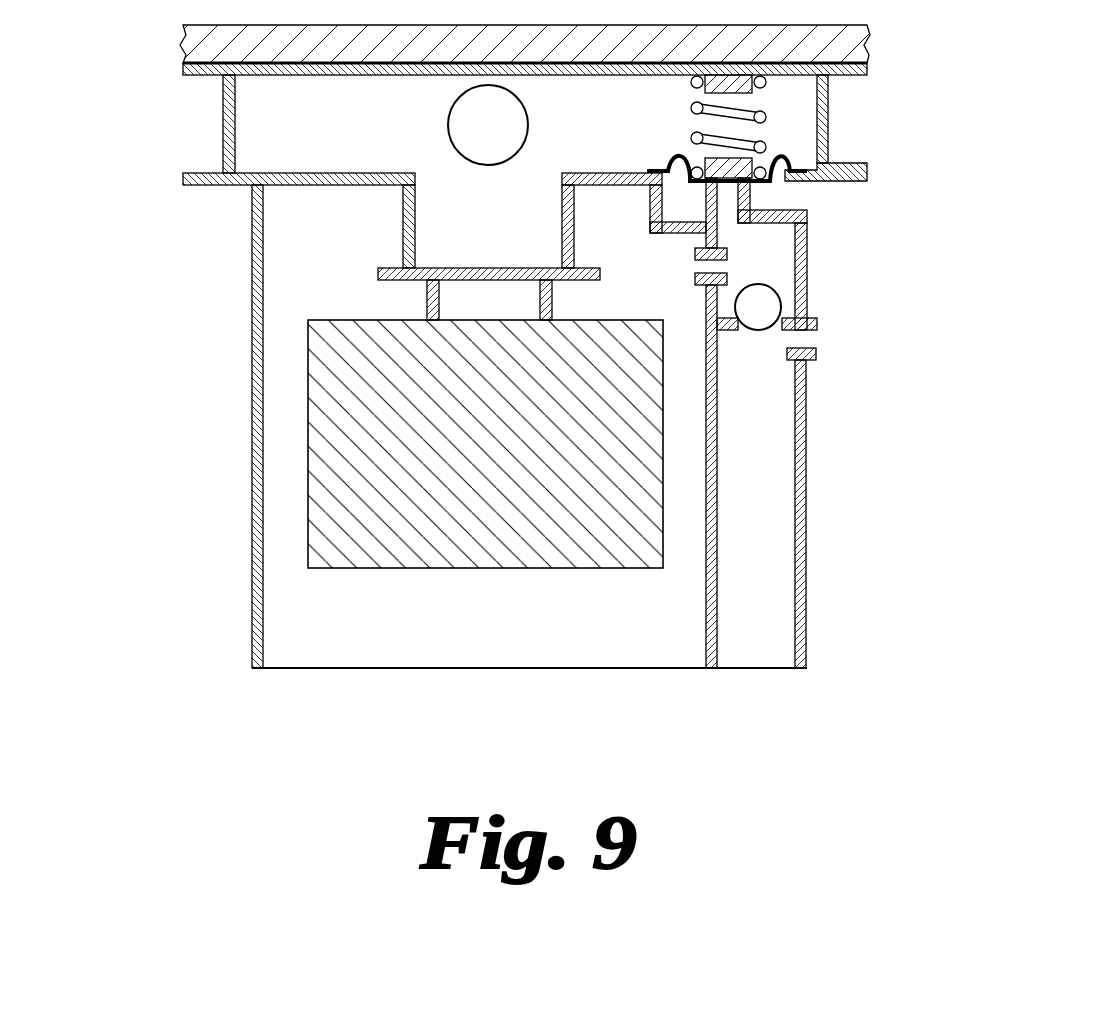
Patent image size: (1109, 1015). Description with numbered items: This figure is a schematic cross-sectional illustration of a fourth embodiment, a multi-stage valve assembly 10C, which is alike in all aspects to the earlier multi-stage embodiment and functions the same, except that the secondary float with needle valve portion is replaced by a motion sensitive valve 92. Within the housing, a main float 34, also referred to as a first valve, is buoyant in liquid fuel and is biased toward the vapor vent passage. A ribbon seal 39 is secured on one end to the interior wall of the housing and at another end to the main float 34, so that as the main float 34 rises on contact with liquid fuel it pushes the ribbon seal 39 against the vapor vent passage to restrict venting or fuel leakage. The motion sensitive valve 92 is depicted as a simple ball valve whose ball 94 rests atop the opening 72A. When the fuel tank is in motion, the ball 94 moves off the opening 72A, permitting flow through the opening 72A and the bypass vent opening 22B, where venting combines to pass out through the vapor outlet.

The multi-stage valve assembly 10C is at (166, 370).
The ribbon seal 39 is at (495, 266).
The main float 34 is at (481, 569).
The bypass vent opening 22B is at (712, 271).
The ball 94 is at (775, 291).
The opening 72A is at (777, 326).
The motion sensitive valve 92 is at (840, 298).